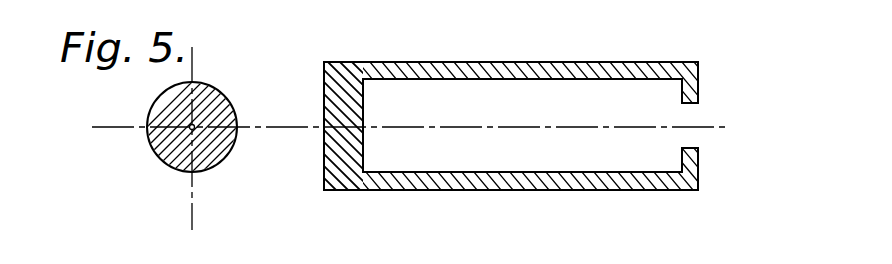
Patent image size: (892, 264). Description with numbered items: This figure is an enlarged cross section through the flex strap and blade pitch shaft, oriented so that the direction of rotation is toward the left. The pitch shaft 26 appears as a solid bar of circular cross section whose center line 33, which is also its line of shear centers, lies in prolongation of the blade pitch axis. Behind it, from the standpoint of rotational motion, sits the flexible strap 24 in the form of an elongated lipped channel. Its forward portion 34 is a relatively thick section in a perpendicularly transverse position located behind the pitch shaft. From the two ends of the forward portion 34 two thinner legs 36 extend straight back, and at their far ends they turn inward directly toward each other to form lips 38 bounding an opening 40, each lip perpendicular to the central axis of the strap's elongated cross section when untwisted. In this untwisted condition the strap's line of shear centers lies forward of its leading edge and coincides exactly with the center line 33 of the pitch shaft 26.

The flexible strap 24 is at (390, 62).
The pitch shaft 26 is at (160, 148).
The center line 33 is at (189, 126).
The forward portion 34 is at (323, 158).
The legs 36 is at (488, 62).
The lips 38 is at (697, 90).
The opening 40 is at (688, 104).